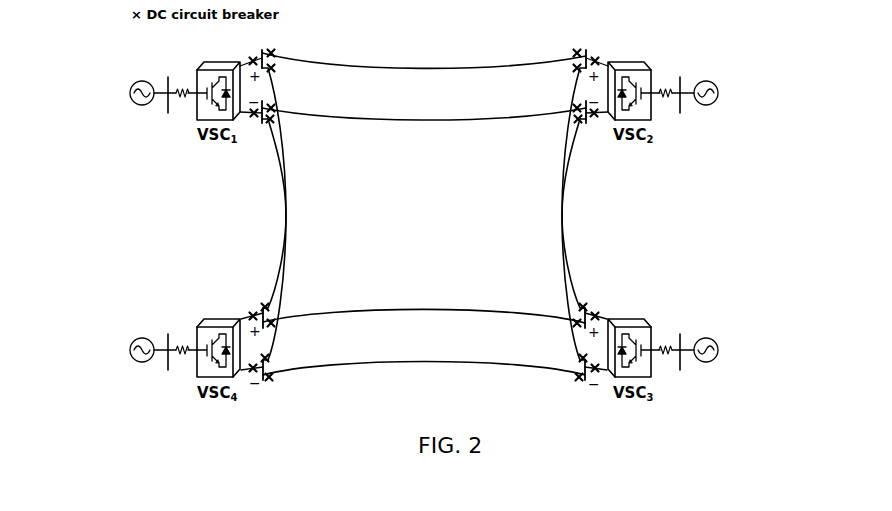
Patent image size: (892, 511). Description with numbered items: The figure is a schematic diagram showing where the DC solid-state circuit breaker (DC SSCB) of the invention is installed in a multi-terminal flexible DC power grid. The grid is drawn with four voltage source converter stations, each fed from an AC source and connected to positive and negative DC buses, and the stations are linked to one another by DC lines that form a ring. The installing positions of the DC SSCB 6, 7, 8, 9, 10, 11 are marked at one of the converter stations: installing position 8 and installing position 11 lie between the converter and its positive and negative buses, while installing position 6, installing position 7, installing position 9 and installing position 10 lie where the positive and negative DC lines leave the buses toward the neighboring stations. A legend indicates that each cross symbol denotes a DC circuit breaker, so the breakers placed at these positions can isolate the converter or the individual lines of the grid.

The installing position of the DC SSCB 6 is at (274, 53).
The installing position of the DC SSCB 7 is at (274, 70).
The installing position of the DC SSCB 8 is at (255, 61).
The installing position of the DC SSCB 9 is at (274, 108).
The installing position of the DC SSCB 10 is at (283, 131).
The installing position of the DC SSCB 11 is at (256, 117).